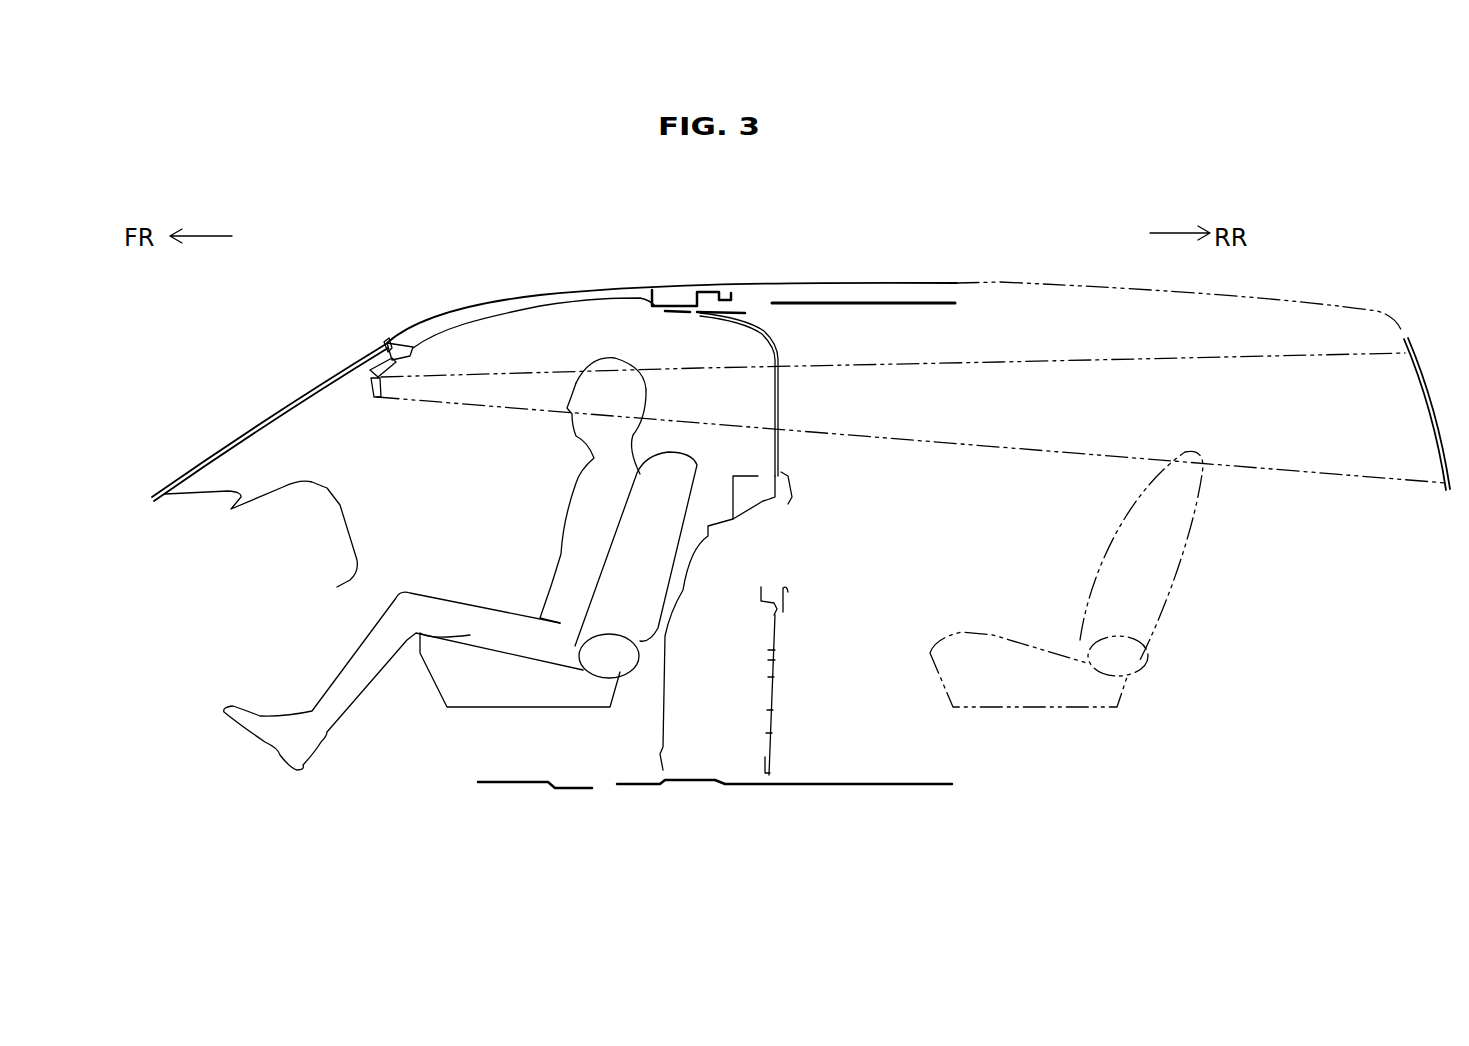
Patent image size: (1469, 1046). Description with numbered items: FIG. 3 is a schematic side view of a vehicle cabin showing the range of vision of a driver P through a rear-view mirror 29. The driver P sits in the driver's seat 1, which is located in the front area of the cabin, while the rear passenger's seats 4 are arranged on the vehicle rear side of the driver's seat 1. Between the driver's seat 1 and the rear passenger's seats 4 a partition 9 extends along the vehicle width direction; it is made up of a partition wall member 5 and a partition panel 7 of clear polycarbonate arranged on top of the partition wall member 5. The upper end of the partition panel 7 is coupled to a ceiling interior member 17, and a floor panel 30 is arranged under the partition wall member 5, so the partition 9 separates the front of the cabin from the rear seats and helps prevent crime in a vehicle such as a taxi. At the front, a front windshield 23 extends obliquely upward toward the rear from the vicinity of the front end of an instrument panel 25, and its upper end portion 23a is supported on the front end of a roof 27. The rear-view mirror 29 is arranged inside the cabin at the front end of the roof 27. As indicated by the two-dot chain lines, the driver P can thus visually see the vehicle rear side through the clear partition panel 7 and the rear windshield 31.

The driver's seat 1 is at (492, 685).
The rear passenger's seats 4 is at (1083, 684).
The partition wall member 5 is at (777, 634).
The partition panel 7 is at (802, 347).
The partition 9 is at (796, 715).
The ceiling interior member 17 is at (905, 305).
The front windshield 23 is at (246, 427).
The upper end portion 23a is at (388, 340).
The instrument panel 25 is at (358, 530).
The roof 27 is at (528, 293).
The rear-view mirror 29 is at (371, 378).
The floor panel 30 is at (918, 782).
The rear windshield 31 is at (1433, 413).
The driver P is at (567, 547).